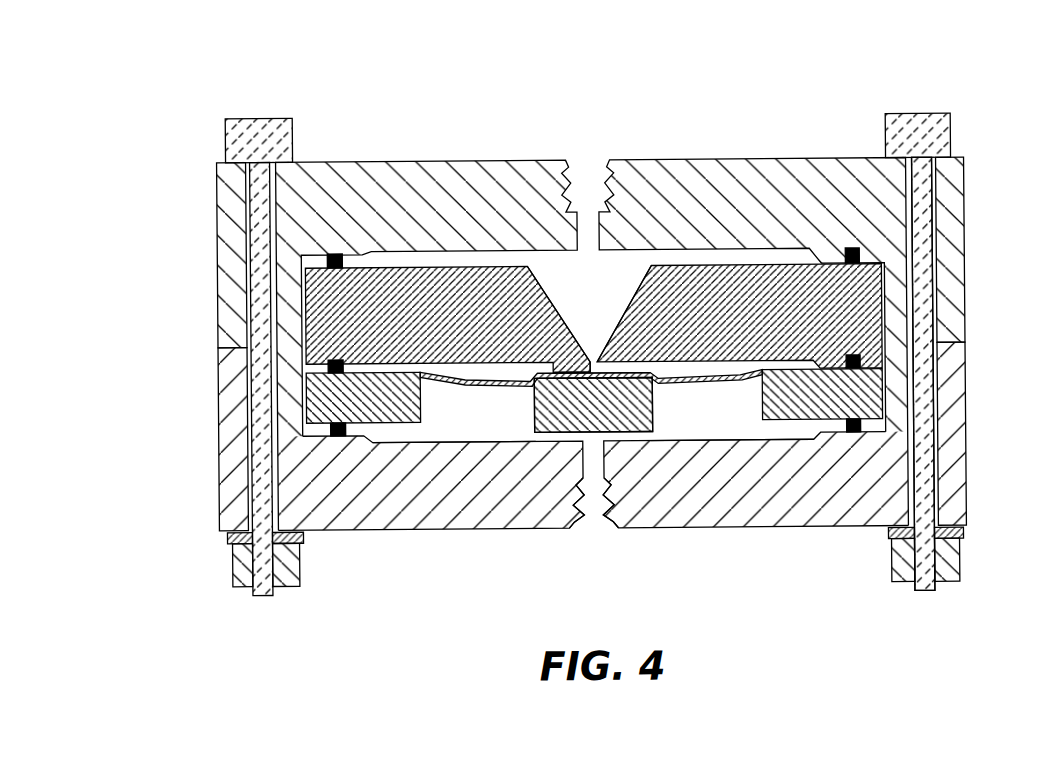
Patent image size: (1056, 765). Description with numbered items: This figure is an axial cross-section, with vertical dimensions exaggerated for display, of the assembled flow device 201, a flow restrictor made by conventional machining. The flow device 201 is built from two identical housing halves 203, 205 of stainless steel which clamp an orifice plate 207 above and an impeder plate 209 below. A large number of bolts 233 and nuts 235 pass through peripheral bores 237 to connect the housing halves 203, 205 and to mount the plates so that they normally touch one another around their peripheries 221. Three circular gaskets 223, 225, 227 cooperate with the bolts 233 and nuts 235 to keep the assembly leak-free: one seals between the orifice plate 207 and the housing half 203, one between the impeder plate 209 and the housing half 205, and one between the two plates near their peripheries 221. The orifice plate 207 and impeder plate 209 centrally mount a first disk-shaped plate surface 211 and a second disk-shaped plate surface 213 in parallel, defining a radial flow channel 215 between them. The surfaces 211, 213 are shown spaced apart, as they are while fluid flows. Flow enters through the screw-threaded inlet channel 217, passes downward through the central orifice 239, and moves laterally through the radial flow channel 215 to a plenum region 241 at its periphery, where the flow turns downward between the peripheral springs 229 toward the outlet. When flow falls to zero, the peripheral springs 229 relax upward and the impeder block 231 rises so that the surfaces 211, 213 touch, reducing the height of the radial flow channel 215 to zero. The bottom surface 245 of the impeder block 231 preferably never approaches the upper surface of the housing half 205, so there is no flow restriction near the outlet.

The flow device 201 is at (729, 133).
The housing half 203 is at (803, 180).
The housing half 205 is at (834, 502).
The orifice plate 207 is at (740, 290).
The impeder plate 209 is at (847, 389).
The first disk-shaped plate surface 211 is at (606, 362).
The second disk-shaped plate surface 213 is at (612, 379).
The radial flow channel 215 is at (560, 374).
The inlet channel 217 is at (586, 356).
The peripheries 221 is at (345, 377).
The circular gasket 223 is at (335, 434).
The circular gasket 225 is at (330, 362).
The circular gasket 227 is at (334, 252).
The peripheral springs 229 is at (465, 383).
The impeder block 231 is at (550, 415).
The bolts 233 is at (921, 117).
The nuts 235 is at (947, 566).
The peripheral bores 237 is at (908, 462).
The central orifice 239 is at (594, 362).
The plenum region 241 is at (660, 374).
The bottom surface of impeder block 245 is at (553, 441).